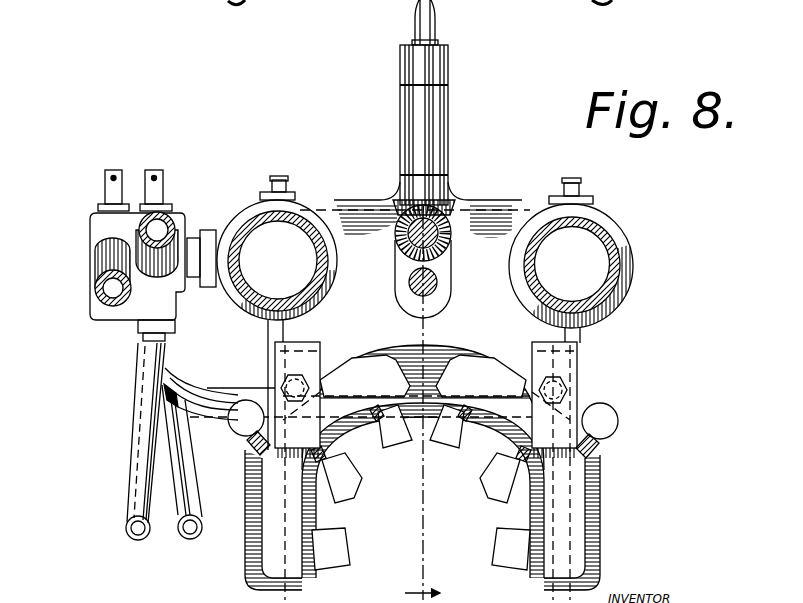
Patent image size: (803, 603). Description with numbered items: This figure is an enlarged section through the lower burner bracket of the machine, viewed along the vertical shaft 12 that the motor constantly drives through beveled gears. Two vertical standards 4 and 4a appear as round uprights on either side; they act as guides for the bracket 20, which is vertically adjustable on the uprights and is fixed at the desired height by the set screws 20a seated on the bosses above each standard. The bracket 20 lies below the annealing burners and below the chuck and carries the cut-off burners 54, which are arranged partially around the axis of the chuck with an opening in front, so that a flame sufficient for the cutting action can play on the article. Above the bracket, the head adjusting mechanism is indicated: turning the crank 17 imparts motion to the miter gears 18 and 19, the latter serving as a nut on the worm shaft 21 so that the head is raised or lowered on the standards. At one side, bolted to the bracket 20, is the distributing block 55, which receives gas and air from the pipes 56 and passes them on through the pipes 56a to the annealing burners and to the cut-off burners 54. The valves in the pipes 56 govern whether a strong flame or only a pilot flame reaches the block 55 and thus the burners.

The standard 4 is at (296, 222).
The standard 4a is at (612, 240).
The vertical shaft 12 is at (426, 295).
The crank 17 is at (448, 67).
The miter gear 18 is at (449, 200).
The miter gear 19 is at (452, 238).
The bracket 20 is at (498, 226).
The set screw 20a is at (600, 160).
The worm shaft 21 is at (397, 246).
The cut-off burner 54 is at (337, 550).
The distributing block 55 is at (100, 232).
The pipe 56 is at (175, 218).
The pipe 56a is at (168, 510).